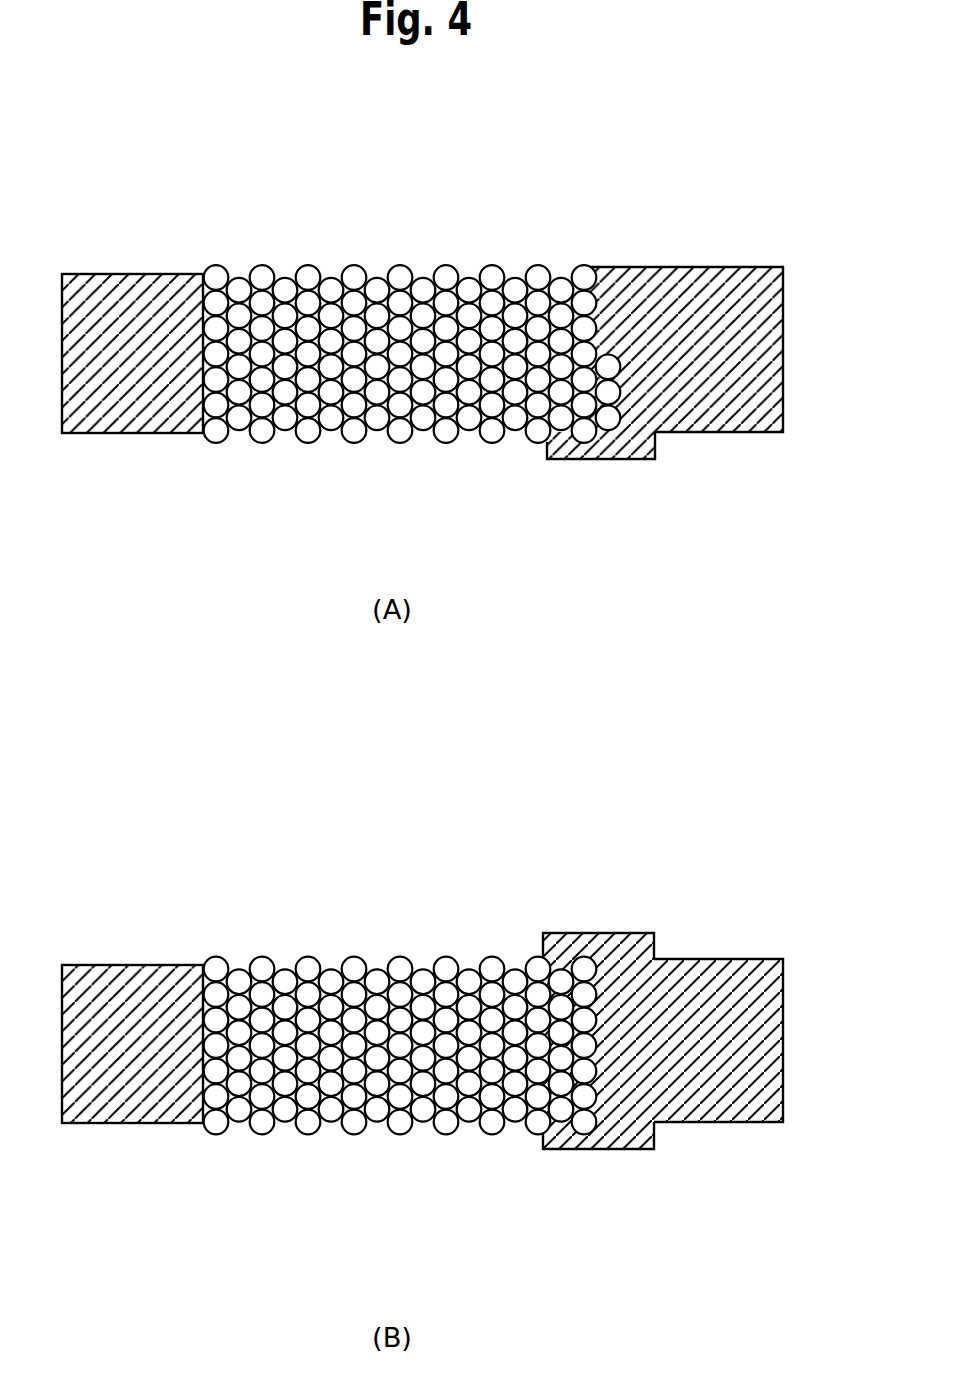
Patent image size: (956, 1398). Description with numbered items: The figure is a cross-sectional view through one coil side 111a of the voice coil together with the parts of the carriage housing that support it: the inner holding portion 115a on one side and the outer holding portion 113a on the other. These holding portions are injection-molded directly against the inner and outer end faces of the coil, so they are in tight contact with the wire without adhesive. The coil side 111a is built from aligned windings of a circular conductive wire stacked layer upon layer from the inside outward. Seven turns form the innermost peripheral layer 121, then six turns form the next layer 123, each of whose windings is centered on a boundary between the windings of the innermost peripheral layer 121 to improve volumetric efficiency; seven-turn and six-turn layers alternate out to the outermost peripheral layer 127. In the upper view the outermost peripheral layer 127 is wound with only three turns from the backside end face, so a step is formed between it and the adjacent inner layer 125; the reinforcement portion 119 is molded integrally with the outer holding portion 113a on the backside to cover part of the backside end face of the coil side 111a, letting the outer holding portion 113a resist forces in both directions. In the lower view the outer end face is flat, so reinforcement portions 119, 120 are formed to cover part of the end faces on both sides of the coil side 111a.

The coil side 111a is at (416, 246).
The outer holding portion 113a is at (693, 267).
The inner holding portion 115a is at (130, 274).
The reinforcement portion 119 is at (547, 459).
The reinforcement portion 120 is at (567, 933).
The innermost peripheral layer 121 is at (210, 448).
The layer 123 is at (245, 438).
The layer 125 is at (585, 452).
The outermost peripheral layer 127 is at (625, 436).